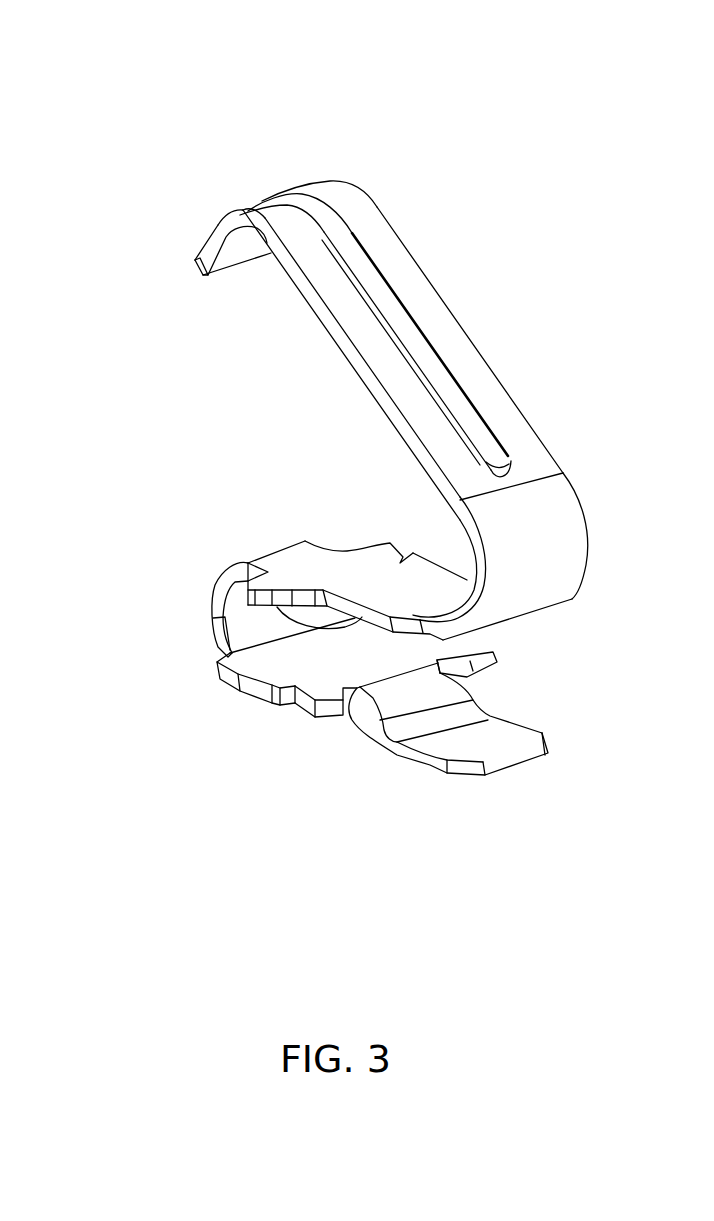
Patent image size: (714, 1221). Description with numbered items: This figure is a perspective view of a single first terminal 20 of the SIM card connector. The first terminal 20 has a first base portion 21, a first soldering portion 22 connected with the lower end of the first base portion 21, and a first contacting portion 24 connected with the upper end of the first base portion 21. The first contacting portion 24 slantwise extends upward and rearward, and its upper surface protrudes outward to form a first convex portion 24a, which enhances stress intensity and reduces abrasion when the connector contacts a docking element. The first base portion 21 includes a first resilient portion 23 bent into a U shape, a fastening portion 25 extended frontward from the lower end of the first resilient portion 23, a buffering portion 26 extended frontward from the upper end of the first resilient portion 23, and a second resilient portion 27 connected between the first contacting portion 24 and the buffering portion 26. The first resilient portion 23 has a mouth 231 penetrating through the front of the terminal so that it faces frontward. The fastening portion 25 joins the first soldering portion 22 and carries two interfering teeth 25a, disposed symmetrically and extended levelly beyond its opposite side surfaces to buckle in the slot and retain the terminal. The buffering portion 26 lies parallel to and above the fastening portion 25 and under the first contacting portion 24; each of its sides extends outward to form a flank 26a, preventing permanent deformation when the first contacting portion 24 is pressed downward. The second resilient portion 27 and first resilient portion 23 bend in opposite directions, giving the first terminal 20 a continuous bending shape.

The first terminal 20 is at (88, 55).
The first base portion 21 is at (172, 628).
The first soldering portion 22 is at (548, 738).
The first resilient portion 23 is at (222, 577).
The mouth 231 is at (217, 673).
The first contacting portion 24 is at (453, 321).
The first convex portion 24a is at (372, 272).
The fastening portion 25 is at (318, 682).
The interfering teeth 25a is at (262, 698).
The buffering portion 26 is at (306, 568).
The flank 26a is at (382, 541).
The second resilient portion 27 is at (557, 583).